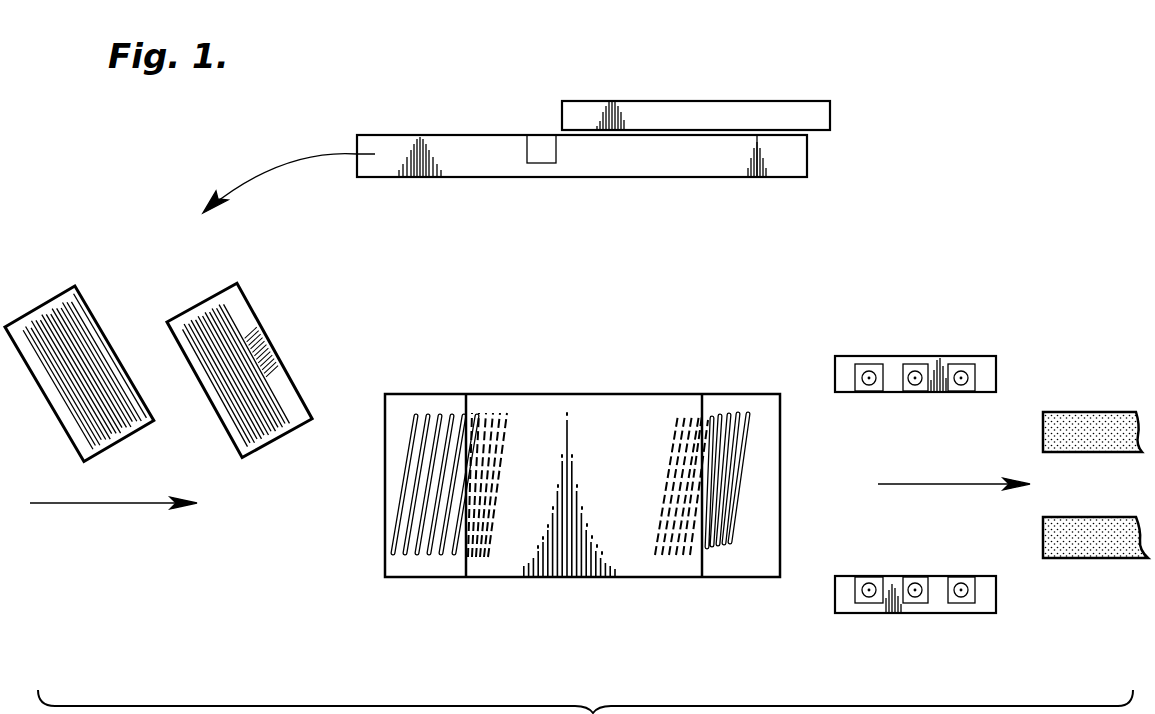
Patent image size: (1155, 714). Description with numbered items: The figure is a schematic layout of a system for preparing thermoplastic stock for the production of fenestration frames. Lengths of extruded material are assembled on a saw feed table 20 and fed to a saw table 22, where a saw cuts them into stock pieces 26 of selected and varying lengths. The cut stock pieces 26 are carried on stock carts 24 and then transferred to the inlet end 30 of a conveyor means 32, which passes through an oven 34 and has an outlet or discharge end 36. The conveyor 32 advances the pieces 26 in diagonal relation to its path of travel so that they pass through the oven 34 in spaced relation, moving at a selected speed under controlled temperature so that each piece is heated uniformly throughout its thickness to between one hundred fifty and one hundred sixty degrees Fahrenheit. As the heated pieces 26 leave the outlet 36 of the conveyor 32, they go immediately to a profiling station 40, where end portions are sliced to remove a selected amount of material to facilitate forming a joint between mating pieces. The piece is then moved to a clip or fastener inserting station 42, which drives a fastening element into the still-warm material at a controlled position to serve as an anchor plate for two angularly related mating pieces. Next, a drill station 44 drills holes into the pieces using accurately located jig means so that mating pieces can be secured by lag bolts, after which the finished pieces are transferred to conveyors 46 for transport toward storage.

The table 20 is at (733, 110).
The saw table 22 is at (628, 178).
The stock carts 24 is at (63, 293).
The stock pieces 26 is at (143, 402).
The inlet end 30 is at (435, 394).
The conveyor means 32 is at (560, 481).
The oven 34 is at (611, 401).
The outlet end 36 is at (743, 580).
The profiling station 40 is at (860, 363).
The fastener inserting station 42 is at (913, 363).
The drill station 44 is at (970, 363).
The conveyors 46 is at (1113, 413).